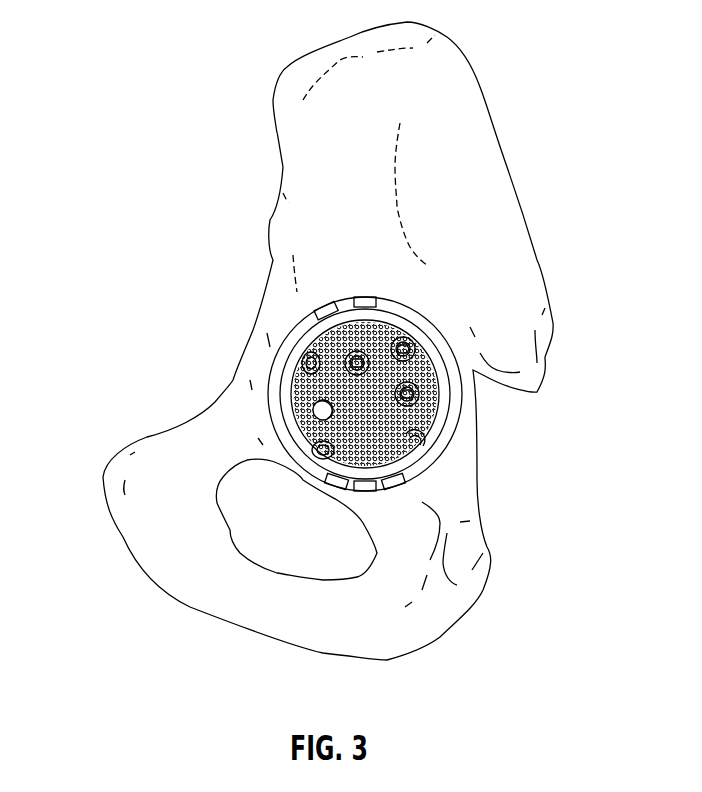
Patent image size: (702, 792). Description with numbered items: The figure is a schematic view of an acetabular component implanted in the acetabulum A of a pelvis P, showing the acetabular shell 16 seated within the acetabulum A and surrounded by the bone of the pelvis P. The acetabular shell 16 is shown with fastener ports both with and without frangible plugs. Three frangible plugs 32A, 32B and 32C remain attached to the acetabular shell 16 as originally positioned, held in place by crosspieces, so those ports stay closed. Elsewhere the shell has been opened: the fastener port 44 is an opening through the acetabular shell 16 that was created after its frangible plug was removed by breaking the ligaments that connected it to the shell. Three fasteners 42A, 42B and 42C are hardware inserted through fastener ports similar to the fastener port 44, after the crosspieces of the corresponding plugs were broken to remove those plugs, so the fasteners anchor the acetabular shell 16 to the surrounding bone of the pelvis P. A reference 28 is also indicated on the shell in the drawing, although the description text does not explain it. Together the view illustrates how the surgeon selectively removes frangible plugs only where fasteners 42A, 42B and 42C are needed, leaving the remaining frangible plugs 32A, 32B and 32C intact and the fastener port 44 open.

The pelvis P is at (480, 148).
The acetabulum A is at (433, 468).
The acetabular shell 16 is at (277, 418).
The augment band / shell rim 28 is at (317, 338).
The frangible plug 32A is at (422, 432).
The frangible plug 32B is at (330, 457).
The frangible plug 32C is at (300, 350).
The fastener 42A is at (347, 325).
The fastener 42B is at (408, 335).
The fastener 42C is at (433, 400).
The fastener port 44 is at (313, 410).